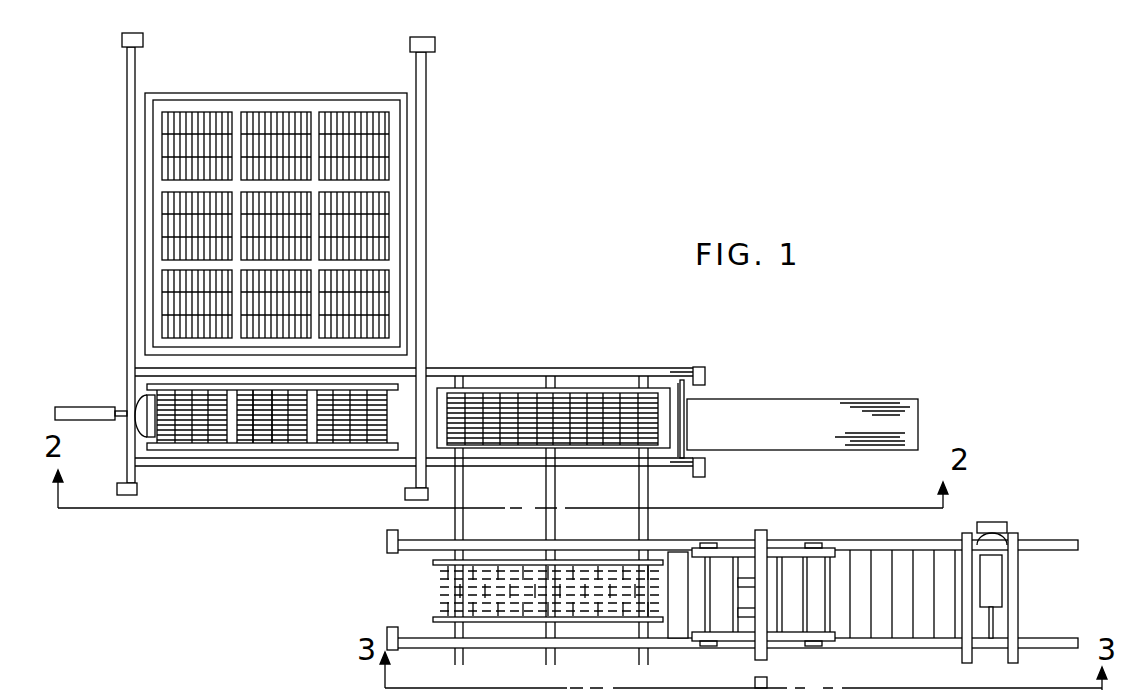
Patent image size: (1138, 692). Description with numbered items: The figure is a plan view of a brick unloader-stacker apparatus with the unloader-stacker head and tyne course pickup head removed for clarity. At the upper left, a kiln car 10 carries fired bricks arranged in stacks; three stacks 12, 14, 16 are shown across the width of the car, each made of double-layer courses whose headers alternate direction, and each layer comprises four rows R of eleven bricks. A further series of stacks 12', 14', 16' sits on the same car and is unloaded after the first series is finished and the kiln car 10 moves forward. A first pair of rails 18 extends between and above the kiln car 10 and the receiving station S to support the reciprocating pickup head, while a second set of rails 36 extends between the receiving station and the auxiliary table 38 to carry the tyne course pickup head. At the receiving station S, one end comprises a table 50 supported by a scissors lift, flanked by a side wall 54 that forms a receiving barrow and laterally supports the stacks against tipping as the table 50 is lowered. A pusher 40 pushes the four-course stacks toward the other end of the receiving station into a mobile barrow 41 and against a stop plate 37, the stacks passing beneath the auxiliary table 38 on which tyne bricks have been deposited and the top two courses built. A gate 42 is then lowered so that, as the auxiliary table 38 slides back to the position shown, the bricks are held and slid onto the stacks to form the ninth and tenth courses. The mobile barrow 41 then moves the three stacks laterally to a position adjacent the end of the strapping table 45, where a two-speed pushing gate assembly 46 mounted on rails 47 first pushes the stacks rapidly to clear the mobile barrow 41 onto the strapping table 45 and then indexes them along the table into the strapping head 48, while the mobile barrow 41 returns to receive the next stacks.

The kiln car 10 is at (392, 150).
The stack 12 is at (397, 301).
The stack 12' is at (397, 226).
The stack 14 is at (196, 282).
The stack 14' is at (198, 207).
The stack 16 is at (156, 299).
The stack 16' is at (161, 224).
The rows R is at (160, 331).
The first pair of rails 18 is at (421, 181).
The second set of rails 36 is at (470, 465).
The pusher 40 is at (76, 405).
The receiving station S is at (143, 436).
The table 50 is at (233, 430).
The side wall 54 is at (258, 442).
The mobile barrow 41 is at (525, 388).
The stop plate 37 is at (677, 408).
The gate 42 is at (686, 420).
The auxiliary table 38 is at (770, 420).
The two-speed pushing gate assembly 46 is at (780, 530).
The strapping table 45 is at (653, 590).
The rails 47 is at (888, 530).
The strapping head 48 is at (1005, 545).